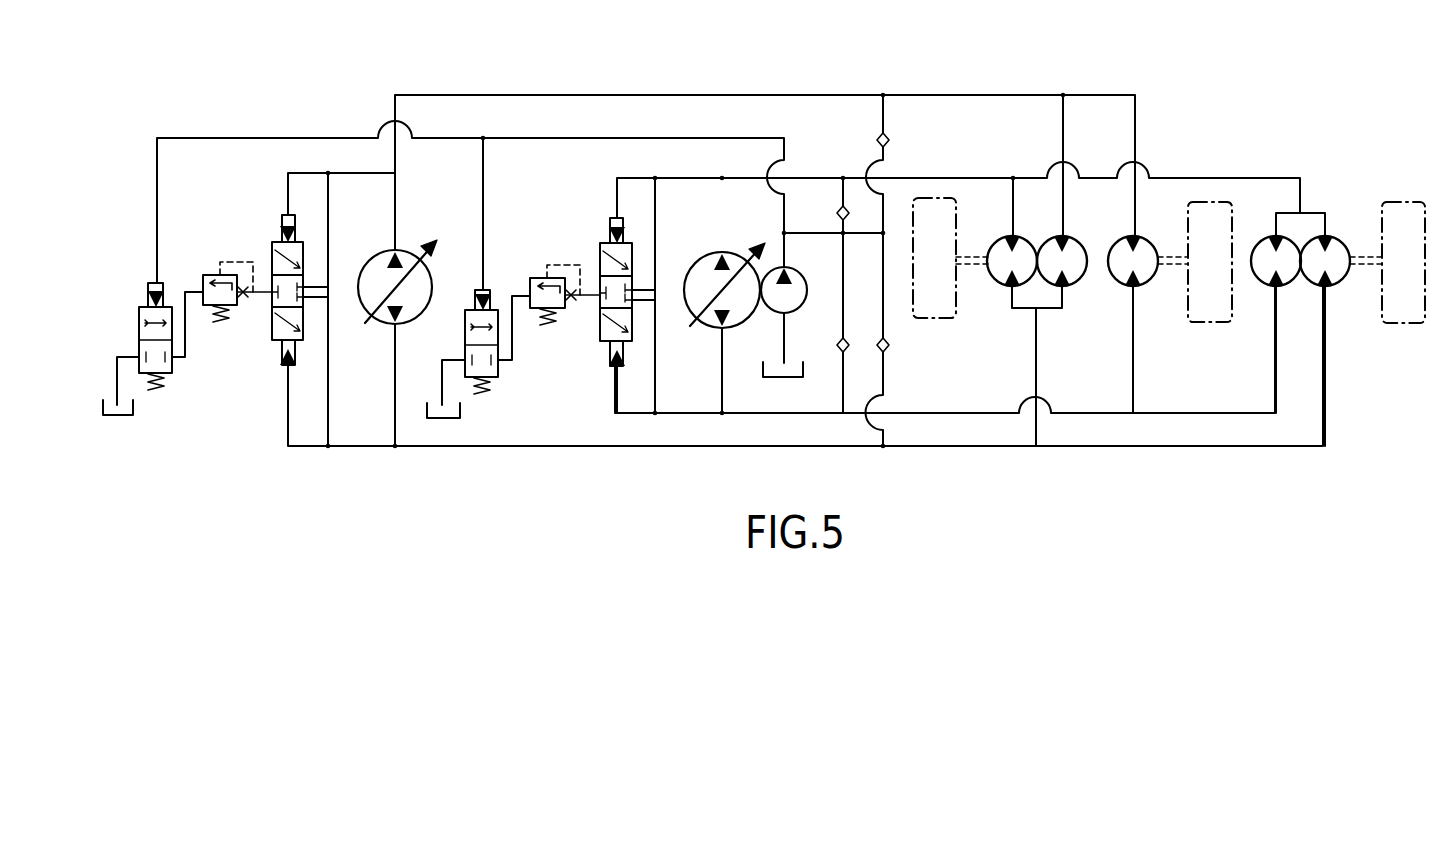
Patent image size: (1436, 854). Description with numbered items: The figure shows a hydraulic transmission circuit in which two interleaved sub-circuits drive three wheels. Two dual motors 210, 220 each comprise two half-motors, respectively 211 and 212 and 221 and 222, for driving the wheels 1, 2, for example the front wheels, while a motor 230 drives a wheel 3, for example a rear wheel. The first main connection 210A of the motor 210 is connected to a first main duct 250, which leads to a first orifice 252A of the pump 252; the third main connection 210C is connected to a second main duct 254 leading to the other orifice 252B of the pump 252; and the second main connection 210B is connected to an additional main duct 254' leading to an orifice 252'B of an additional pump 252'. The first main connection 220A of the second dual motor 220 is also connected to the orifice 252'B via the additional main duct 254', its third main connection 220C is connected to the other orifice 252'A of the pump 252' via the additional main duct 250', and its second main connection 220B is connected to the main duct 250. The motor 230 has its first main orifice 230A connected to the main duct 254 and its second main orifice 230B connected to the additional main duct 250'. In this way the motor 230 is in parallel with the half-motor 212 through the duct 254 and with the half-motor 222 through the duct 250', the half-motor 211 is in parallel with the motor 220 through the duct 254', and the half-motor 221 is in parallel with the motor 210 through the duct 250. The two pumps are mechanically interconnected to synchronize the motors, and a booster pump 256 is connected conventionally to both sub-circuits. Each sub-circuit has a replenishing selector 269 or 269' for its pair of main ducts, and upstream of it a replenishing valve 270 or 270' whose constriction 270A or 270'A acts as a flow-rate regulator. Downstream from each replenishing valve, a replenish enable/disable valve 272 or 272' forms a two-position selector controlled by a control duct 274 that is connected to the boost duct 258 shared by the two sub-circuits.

The wheel 1 is at (932, 318).
The wheel 2 is at (1402, 206).
The wheel 3 is at (1210, 323).
The dual motor 210 is at (1041, 222).
The first main connection 210A is at (1038, 308).
The second main connection 210B is at (1012, 238).
The third main connection 210C is at (1062, 236).
The half-motor 211 is at (997, 251).
The half-motor 212 is at (1070, 273).
The dual motor 220 is at (1346, 290).
The first main connection 220A is at (1300, 212).
The second main connection 220B is at (1320, 286).
The third main connection 220C is at (1270, 285).
The half-motor 221 is at (1338, 243).
The half-motor 222 is at (1260, 242).
The motor 230 is at (1120, 285).
The first main orifice 230A is at (1160, 232).
The second main orifice 230B is at (1135, 286).
The first main duct 250 is at (805, 389).
The additional main duct 250' is at (945, 351).
The pump 252 is at (419, 282).
The first orifice 252A is at (390, 322).
The orifice 252B is at (404, 250).
The additional pump 252' is at (732, 299).
The orifice 252'A is at (706, 349).
The orifice 252'B is at (711, 235).
The second main duct 254 is at (765, 151).
The additional main duct 254' is at (958, 168).
The booster pump 256 is at (800, 300).
The boost duct 258 is at (786, 246).
The replenishing selector 269 is at (278, 316).
The replenishing selector 269' is at (592, 266).
The replenishing valve 270 is at (206, 269).
The constriction 270A is at (243, 300).
The replenishing valve 270' is at (530, 280).
The constriction 270'A is at (571, 316).
The replenish enable/disable valve 272 is at (159, 350).
The replenish enable/disable valve 272' is at (499, 280).
The control duct 274 is at (312, 137).